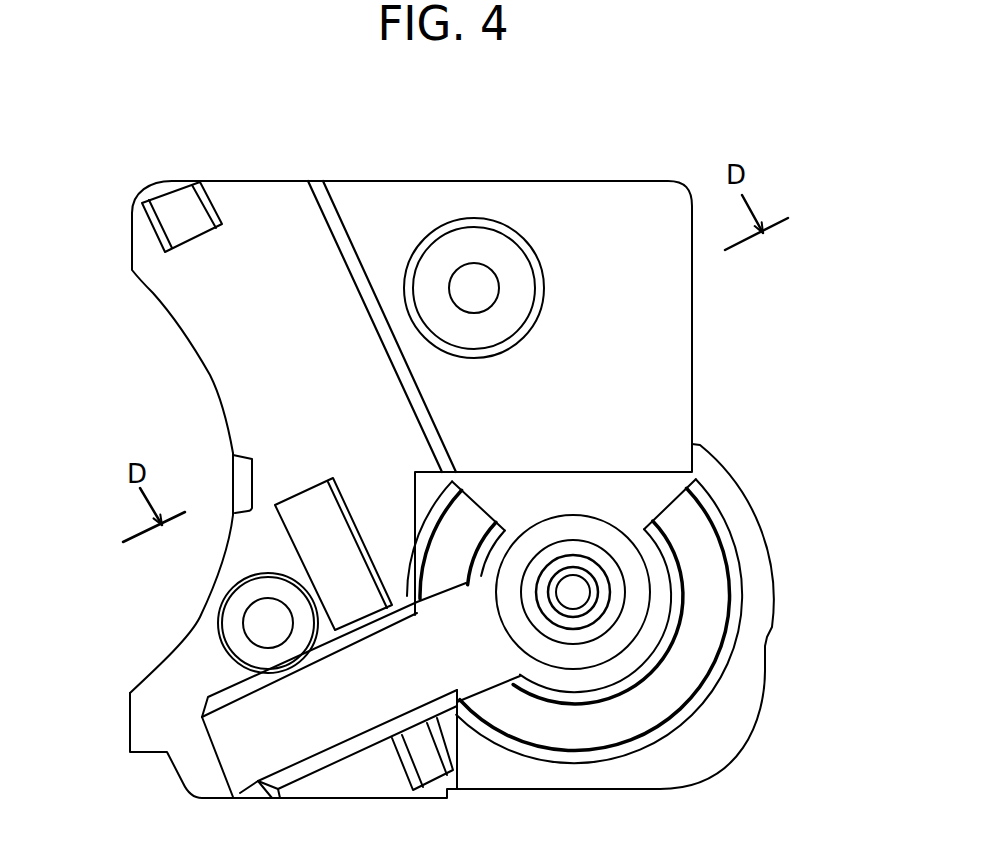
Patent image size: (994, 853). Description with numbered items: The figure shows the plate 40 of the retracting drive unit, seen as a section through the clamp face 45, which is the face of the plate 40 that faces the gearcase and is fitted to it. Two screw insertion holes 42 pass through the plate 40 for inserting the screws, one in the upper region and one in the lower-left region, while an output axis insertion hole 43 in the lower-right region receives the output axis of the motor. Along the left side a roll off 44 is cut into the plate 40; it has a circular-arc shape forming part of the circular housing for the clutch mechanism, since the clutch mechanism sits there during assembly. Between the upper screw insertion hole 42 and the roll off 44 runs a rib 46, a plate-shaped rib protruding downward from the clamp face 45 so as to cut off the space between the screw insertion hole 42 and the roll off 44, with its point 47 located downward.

The plate 40 is at (566, 150).
The screw insertion hole 42 is at (462, 266).
The output axis insertion hole 43 is at (582, 610).
The roll off 44 is at (200, 353).
The clamp face 45 is at (664, 360).
The rib 46 is at (342, 255).
The point 47 is at (346, 226).